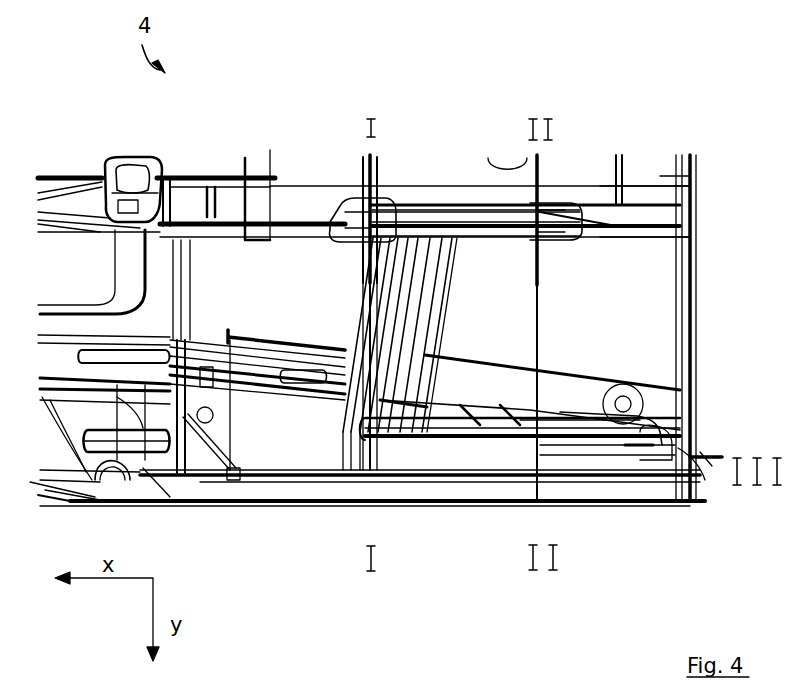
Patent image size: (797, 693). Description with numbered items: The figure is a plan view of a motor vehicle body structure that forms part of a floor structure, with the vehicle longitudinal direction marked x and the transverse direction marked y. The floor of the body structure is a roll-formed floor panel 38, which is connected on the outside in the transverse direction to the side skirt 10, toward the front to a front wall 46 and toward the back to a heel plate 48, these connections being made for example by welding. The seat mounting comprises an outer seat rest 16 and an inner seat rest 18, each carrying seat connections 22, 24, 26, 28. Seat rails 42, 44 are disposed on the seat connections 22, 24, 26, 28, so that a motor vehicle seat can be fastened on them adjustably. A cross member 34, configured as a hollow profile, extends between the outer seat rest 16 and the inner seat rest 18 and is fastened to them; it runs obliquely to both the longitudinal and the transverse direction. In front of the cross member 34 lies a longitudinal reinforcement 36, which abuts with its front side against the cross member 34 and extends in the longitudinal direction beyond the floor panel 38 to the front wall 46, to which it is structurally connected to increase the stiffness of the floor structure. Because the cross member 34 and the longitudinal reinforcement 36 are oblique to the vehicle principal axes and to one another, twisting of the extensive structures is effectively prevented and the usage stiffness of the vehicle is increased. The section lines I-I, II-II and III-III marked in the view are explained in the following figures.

The side skirt 10 is at (290, 503).
The outer seat rest 16 is at (490, 470).
The inner seat rest 18 is at (408, 210).
The seat connection 22 is at (368, 440).
The seat connection 24 is at (547, 447).
The seat connection 26 is at (380, 297).
The seat connection 28 is at (547, 220).
The cross member 34 is at (327, 218).
The longitudinal reinforcement 36 is at (88, 332).
The floor panel 38 is at (613, 260).
The seat rail 42 is at (440, 438).
The seat rail 44 is at (430, 220).
The front wall 46 is at (127, 262).
The heel plate 48 is at (680, 255).